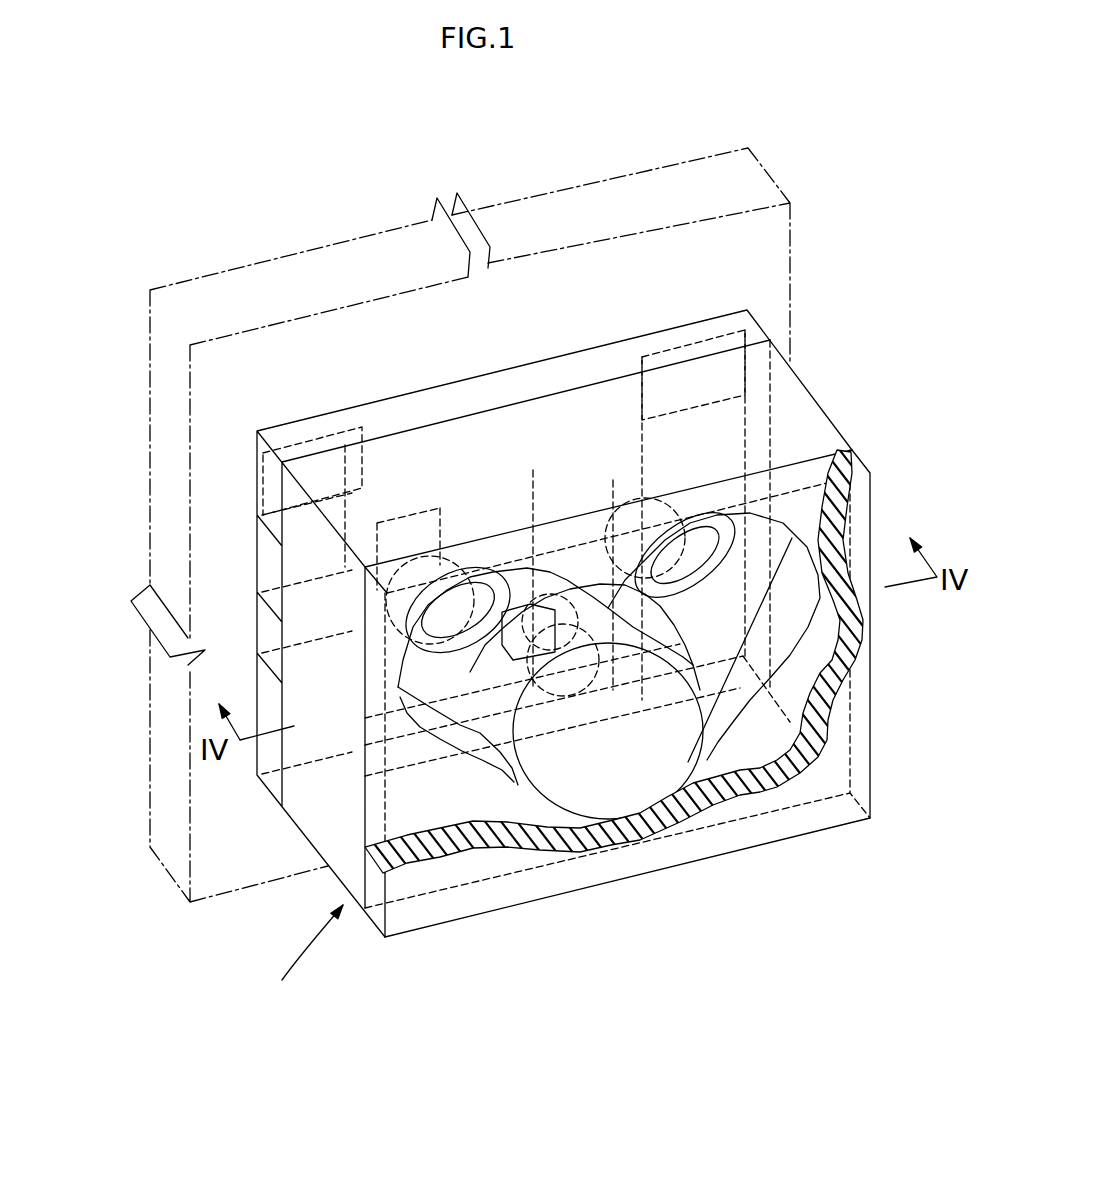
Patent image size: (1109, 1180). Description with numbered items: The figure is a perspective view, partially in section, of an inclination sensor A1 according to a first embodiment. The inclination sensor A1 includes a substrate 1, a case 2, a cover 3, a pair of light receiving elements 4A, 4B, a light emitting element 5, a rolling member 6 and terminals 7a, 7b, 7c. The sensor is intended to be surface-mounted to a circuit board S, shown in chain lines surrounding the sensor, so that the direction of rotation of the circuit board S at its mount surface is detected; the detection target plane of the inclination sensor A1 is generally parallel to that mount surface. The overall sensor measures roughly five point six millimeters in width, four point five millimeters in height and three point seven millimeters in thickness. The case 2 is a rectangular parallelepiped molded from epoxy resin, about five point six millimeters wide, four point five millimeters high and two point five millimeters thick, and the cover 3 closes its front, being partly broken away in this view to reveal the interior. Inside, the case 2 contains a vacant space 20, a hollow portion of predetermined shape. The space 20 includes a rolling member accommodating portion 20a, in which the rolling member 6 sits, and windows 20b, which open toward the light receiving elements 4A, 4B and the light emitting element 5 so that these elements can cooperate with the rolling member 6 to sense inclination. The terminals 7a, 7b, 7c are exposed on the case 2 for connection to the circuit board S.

The substrate 1 is at (750, 323).
The case 2 is at (788, 385).
The cover 3 is at (857, 462).
The light receiving element 4A is at (398, 545).
The light receiving element 4B is at (640, 510).
The light emitting element 5 is at (530, 600).
The rolling member 6 is at (645, 758).
The terminal 7a is at (326, 450).
The terminal 7b is at (690, 355).
The terminal 7c is at (412, 690).
The space 20 is at (490, 762).
The rolling member accommodating portion 20a is at (735, 683).
The window 20b is at (468, 580).
The circuit board S is at (150, 505).
The inclination sensor A1 is at (298, 961).